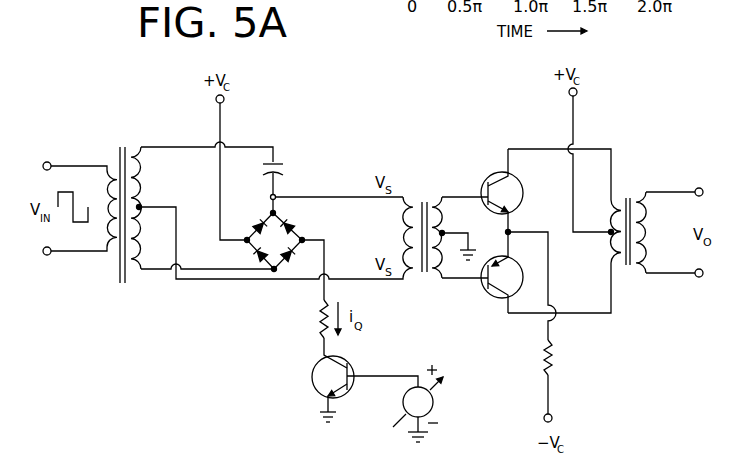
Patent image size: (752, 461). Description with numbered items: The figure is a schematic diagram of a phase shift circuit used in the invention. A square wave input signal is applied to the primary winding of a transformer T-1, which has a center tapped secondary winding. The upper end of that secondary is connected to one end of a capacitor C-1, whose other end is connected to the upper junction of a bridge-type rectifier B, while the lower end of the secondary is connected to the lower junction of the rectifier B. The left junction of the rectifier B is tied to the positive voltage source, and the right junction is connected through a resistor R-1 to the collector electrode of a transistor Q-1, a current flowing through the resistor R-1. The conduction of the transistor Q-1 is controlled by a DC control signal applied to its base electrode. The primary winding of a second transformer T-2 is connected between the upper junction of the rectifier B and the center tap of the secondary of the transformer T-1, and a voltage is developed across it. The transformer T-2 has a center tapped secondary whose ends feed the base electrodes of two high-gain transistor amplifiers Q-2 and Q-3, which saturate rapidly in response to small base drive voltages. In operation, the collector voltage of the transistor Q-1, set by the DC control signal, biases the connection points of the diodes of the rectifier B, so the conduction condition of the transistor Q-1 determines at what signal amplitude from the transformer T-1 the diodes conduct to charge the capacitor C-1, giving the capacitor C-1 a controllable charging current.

The transformer T-1 is at (120, 144).
The capacitor C-1 is at (280, 163).
The bridge-type rectifier B is at (275, 241).
The resistor R-1 is at (318, 316).
The transistor Q-1 is at (312, 378).
The DC control signal DC is at (462, 403).
The transformer T-2 is at (422, 200).
The high-gain transistor amplifier Q-2 is at (497, 172).
The high-gain transistor amplifier Q-3 is at (498, 298).